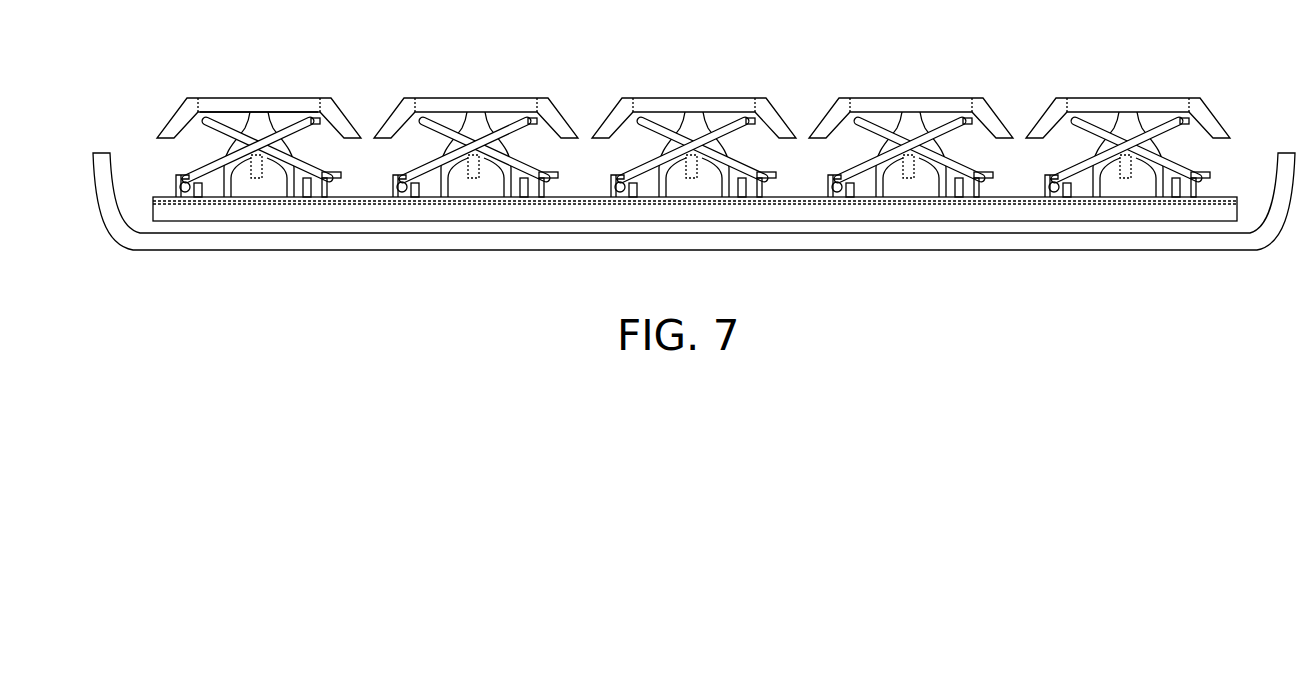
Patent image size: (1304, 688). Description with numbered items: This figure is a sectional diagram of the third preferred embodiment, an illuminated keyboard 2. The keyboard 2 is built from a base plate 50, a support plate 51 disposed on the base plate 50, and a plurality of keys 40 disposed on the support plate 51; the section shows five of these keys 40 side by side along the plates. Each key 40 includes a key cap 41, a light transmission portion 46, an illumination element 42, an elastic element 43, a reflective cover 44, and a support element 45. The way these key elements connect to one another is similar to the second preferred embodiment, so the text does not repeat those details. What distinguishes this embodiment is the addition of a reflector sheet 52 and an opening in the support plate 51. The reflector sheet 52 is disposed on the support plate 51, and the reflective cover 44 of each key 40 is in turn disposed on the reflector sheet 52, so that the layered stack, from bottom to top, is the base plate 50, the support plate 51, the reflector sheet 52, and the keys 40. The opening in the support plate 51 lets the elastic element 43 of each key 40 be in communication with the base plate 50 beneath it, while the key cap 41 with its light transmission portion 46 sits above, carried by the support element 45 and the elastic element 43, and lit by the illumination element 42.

The illuminated keyboard 2 is at (1128, 53).
The key 40 is at (237, 61).
The key cap 41 is at (187, 98).
The illumination element 42 is at (190, 197).
The elastic element 43 is at (306, 118).
The reflective cover 44 is at (205, 178).
The support element 45 is at (322, 170).
The light transmission portion 46 is at (272, 106).
The base plate 50 is at (240, 215).
The support plate 51 is at (300, 204).
The reflector sheet 52 is at (357, 199).